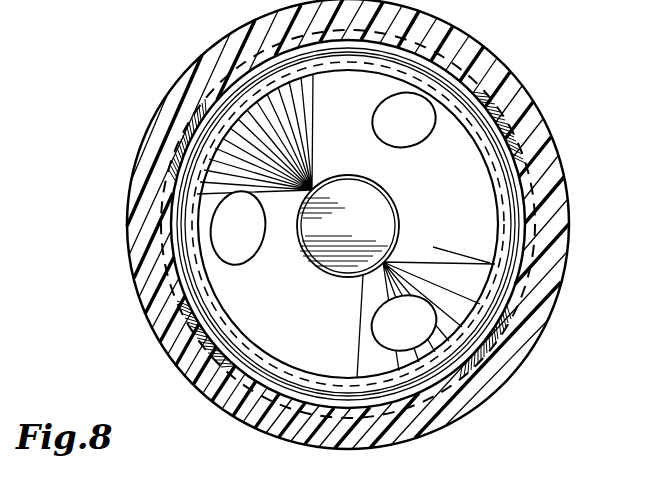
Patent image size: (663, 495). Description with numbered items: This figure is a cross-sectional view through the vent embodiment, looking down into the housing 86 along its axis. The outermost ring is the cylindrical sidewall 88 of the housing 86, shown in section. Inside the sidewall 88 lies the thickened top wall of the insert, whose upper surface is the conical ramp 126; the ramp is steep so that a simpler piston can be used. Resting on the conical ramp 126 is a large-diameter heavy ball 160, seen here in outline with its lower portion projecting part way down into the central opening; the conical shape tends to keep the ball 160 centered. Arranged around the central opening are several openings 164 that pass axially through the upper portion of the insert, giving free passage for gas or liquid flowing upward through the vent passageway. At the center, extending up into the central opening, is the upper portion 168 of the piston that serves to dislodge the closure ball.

The housing 86 is at (130, 158).
The cylindrical sidewall 88 is at (127, 222).
The conical ramp 126 is at (562, 180).
The heavy ball 160 is at (535, 238).
The openings 164 is at (418, 122).
The upper portion 168 is at (370, 212).